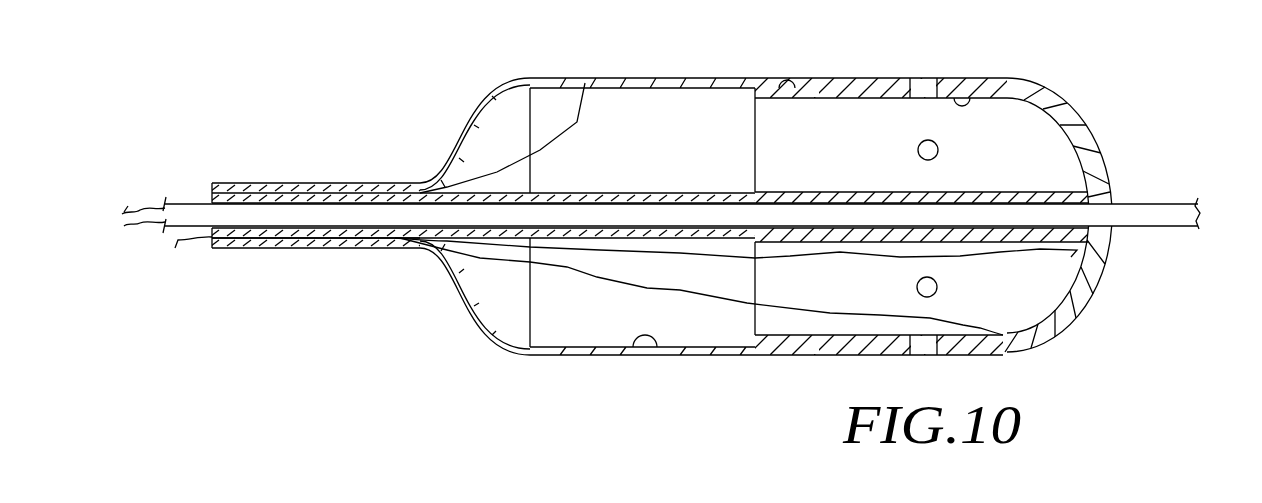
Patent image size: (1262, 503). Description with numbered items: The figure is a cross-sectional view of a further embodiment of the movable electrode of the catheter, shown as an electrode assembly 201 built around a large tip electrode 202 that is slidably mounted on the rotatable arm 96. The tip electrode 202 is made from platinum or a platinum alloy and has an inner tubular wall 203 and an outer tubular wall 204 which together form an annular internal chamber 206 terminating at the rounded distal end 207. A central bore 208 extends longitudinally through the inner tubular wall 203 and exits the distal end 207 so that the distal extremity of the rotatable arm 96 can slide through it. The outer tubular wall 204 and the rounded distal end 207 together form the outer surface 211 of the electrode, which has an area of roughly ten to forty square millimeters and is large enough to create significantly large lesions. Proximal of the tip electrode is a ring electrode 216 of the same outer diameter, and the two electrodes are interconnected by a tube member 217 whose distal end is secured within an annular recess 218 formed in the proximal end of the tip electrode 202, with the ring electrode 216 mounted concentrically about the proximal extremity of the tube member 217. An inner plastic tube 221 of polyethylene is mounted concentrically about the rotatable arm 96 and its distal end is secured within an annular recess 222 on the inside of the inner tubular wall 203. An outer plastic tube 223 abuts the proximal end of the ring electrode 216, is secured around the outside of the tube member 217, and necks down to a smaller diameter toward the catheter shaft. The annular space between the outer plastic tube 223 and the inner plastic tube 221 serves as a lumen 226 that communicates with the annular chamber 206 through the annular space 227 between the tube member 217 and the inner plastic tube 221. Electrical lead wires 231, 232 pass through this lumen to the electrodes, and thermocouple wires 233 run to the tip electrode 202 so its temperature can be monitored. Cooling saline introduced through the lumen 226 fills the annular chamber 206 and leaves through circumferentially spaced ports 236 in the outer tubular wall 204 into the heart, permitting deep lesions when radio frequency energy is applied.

The rotatable arm 96 is at (1186, 228).
The electrode assembly 201 is at (1050, 68).
The tip electrode 202 is at (1060, 111).
The inner tubular wall 203 is at (948, 195).
The outer tubular wall 204 is at (860, 84).
The annular internal chamber 206 is at (971, 97).
The rounded distal end 207 is at (1092, 151).
The central bore 208 is at (986, 192).
The outer surface 211 is at (988, 357).
The ring electrode 216 is at (603, 78).
The tube member 217 is at (686, 78).
The annular recess 218 is at (781, 86).
The inner plastic tube 221 is at (630, 194).
The annular recess 222 is at (776, 192).
The outer plastic tube 223 is at (278, 188).
The lumen 226 is at (358, 193).
The annular space 227 is at (655, 344).
The wire 231 is at (927, 318).
The wire 232 is at (578, 122).
The thermocouple wires 233 is at (978, 258).
The ports 236 is at (917, 289).